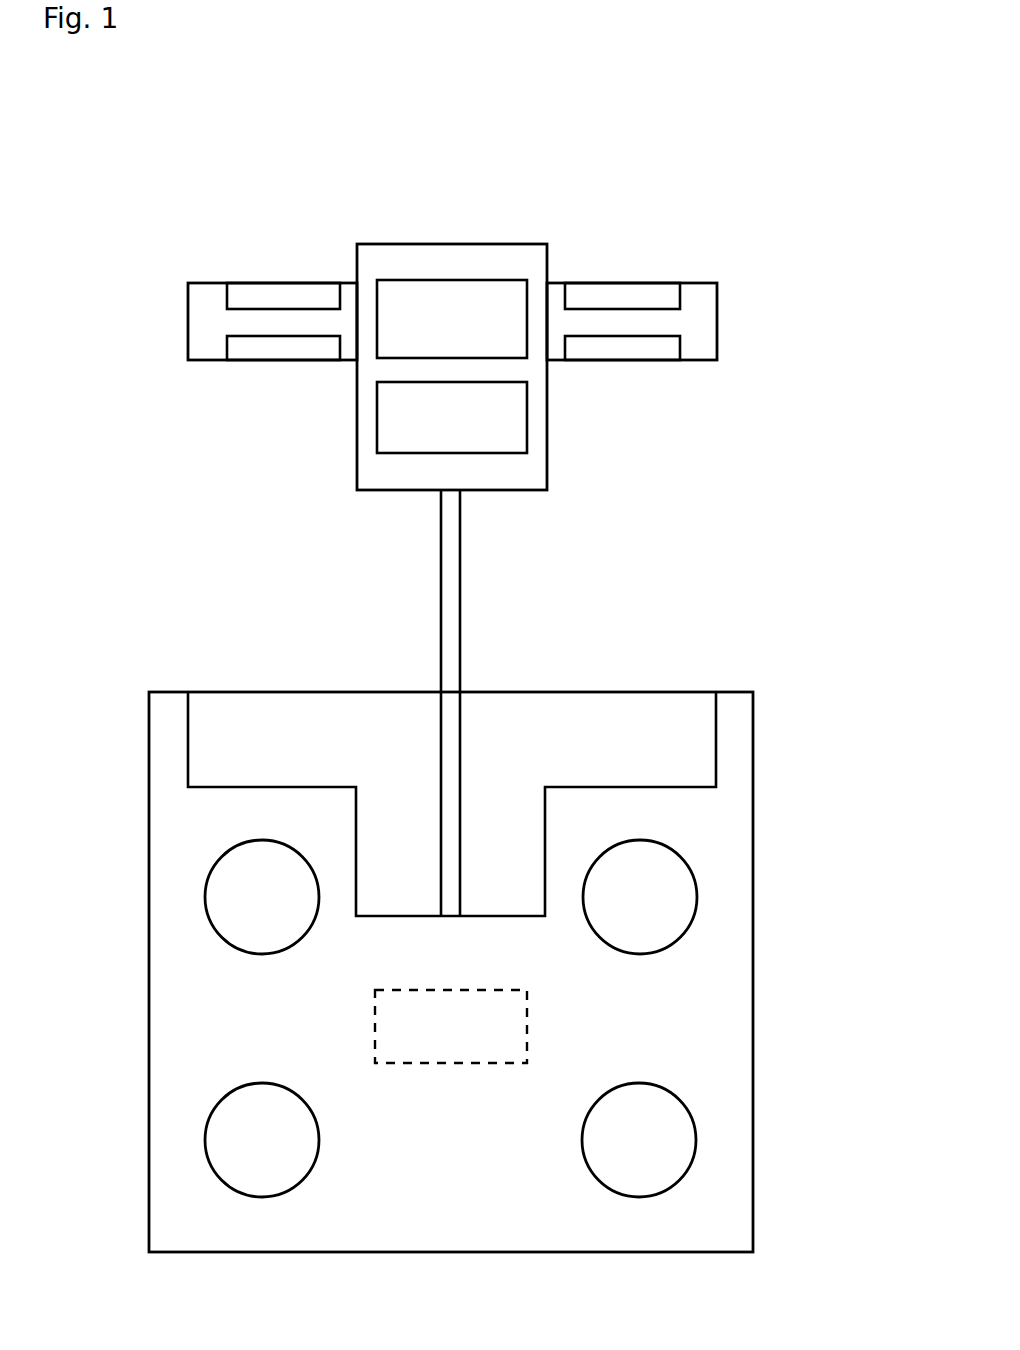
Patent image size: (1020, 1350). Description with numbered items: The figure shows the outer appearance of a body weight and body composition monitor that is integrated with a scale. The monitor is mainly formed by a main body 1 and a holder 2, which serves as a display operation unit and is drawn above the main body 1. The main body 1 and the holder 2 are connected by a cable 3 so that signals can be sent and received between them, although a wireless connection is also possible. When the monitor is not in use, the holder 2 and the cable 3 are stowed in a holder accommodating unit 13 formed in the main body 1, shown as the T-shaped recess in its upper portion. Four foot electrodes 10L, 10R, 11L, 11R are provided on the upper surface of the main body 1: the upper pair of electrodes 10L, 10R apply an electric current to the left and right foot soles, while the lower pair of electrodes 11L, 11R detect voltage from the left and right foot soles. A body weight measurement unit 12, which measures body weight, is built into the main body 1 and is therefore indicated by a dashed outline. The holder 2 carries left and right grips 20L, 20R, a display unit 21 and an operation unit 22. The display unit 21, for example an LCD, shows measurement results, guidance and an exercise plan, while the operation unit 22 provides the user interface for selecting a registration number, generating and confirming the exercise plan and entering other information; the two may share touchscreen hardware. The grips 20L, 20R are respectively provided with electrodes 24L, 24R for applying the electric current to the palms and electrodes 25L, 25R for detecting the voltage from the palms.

The main body 1 is at (178, 638).
The holder 2 is at (222, 162).
The cable 3 is at (452, 650).
The foot electrode 10L is at (222, 866).
The foot electrode 10R is at (710, 846).
The foot electrode 11L is at (222, 1110).
The foot electrode 11R is at (710, 1087).
The body weight measurement unit 12 is at (450, 1058).
The holder accommodating unit 13 is at (320, 706).
The grip 20L is at (198, 317).
The grip 20R is at (710, 317).
The display unit 21 is at (393, 289).
The operation unit 22 is at (393, 431).
The electrode 24L is at (254, 292).
The electrode 24R is at (654, 292).
The electrode 25L is at (256, 352).
The electrode 25R is at (651, 352).